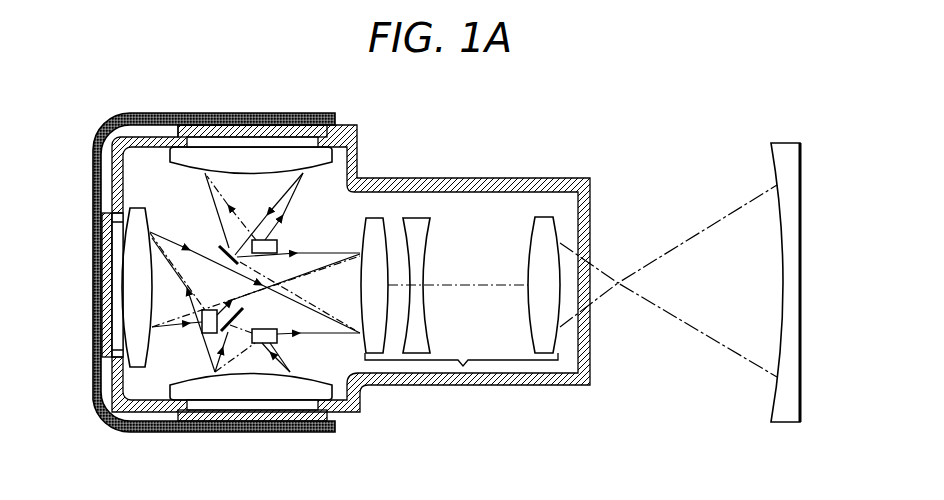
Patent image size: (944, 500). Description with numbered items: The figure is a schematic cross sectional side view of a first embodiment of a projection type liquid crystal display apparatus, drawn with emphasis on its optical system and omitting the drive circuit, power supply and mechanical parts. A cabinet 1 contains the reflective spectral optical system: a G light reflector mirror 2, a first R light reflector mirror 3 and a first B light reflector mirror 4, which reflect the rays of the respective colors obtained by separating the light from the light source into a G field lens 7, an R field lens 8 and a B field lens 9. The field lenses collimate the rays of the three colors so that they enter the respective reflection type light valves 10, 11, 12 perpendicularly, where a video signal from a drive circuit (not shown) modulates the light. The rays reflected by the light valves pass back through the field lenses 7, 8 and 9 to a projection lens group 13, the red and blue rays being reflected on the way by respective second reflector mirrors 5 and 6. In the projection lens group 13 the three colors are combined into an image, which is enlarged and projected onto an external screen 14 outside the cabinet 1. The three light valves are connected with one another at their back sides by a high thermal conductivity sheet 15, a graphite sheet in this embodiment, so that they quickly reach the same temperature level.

The cabinet 1 is at (520, 180).
The G light reflector mirror 2 is at (202, 325).
The first R light reflector mirror 3 is at (278, 244).
The first B light reflector mirror 4 is at (279, 336).
The second reflector mirror 5 is at (219, 250).
The second reflector mirror 6 is at (221, 330).
The G field lens 7 is at (130, 306).
The R field lens 8 is at (252, 155).
The B field lens 9 is at (268, 384).
The light valve 10 is at (102, 233).
The light valve 11 is at (293, 123).
The light valve 12 is at (212, 421).
The projection lens group 13 is at (463, 367).
The external screen 14 is at (795, 143).
The high thermal conductivity sheet 15 is at (147, 113).